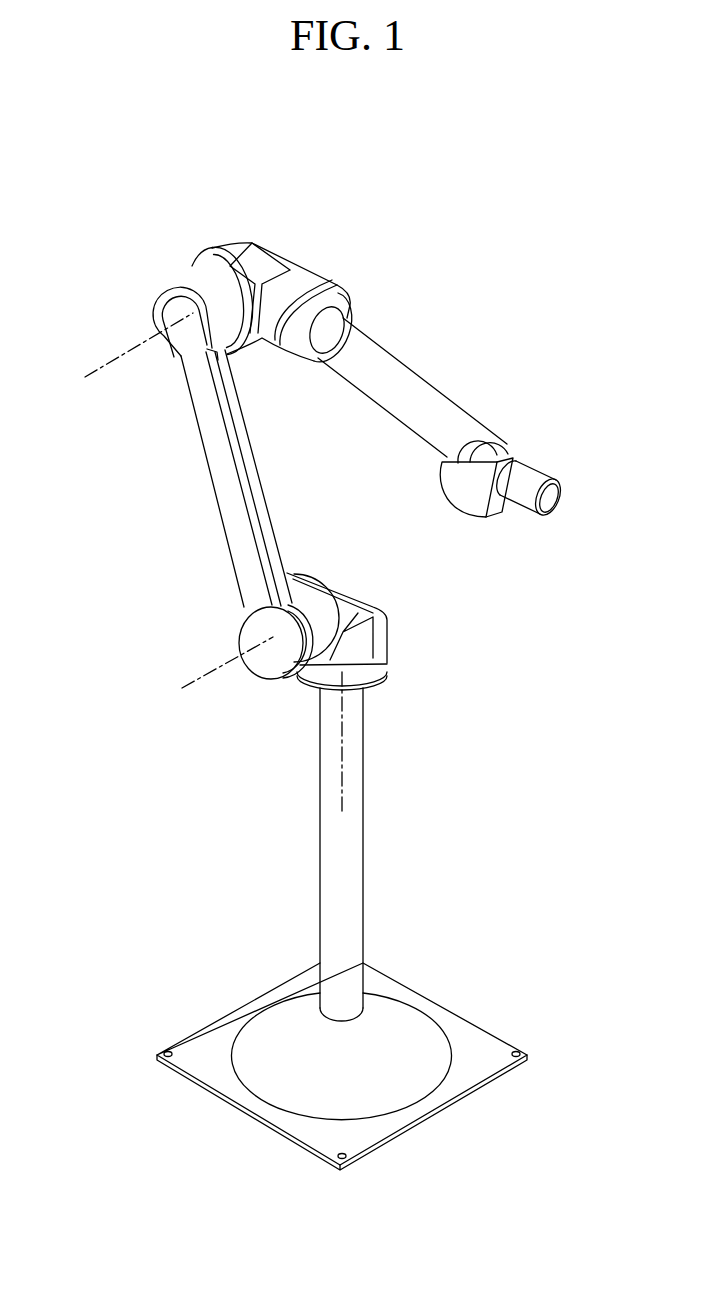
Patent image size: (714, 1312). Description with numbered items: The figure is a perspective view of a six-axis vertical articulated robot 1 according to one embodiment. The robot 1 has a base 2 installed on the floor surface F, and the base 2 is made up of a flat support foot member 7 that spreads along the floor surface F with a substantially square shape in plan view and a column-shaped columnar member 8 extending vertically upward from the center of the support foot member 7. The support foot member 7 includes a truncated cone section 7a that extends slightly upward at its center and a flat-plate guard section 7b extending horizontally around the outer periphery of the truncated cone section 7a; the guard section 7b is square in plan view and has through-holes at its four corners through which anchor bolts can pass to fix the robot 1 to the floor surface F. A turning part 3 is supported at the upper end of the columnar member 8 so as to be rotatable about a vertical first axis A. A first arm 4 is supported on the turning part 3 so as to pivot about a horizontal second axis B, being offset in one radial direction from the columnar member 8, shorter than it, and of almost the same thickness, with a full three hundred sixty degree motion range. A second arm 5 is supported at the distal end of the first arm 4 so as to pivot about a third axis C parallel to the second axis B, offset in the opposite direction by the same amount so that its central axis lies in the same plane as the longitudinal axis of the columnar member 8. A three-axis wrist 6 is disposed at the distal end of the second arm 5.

The robot 1 is at (63, 206).
The base 2 is at (244, 939).
The turning part 3 is at (378, 662).
The first arm 4 is at (198, 478).
The second arm 5 is at (253, 228).
The wrist 6 is at (562, 524).
The support foot member 7 is at (189, 1020).
The truncated cone section 7a is at (400, 1020).
The guard section 7b is at (472, 1038).
The columnar member 8 is at (320, 813).
The first axis A is at (342, 738).
The second axis B is at (215, 670).
The third axis C is at (115, 360).
The floor surface F is at (110, 1110).